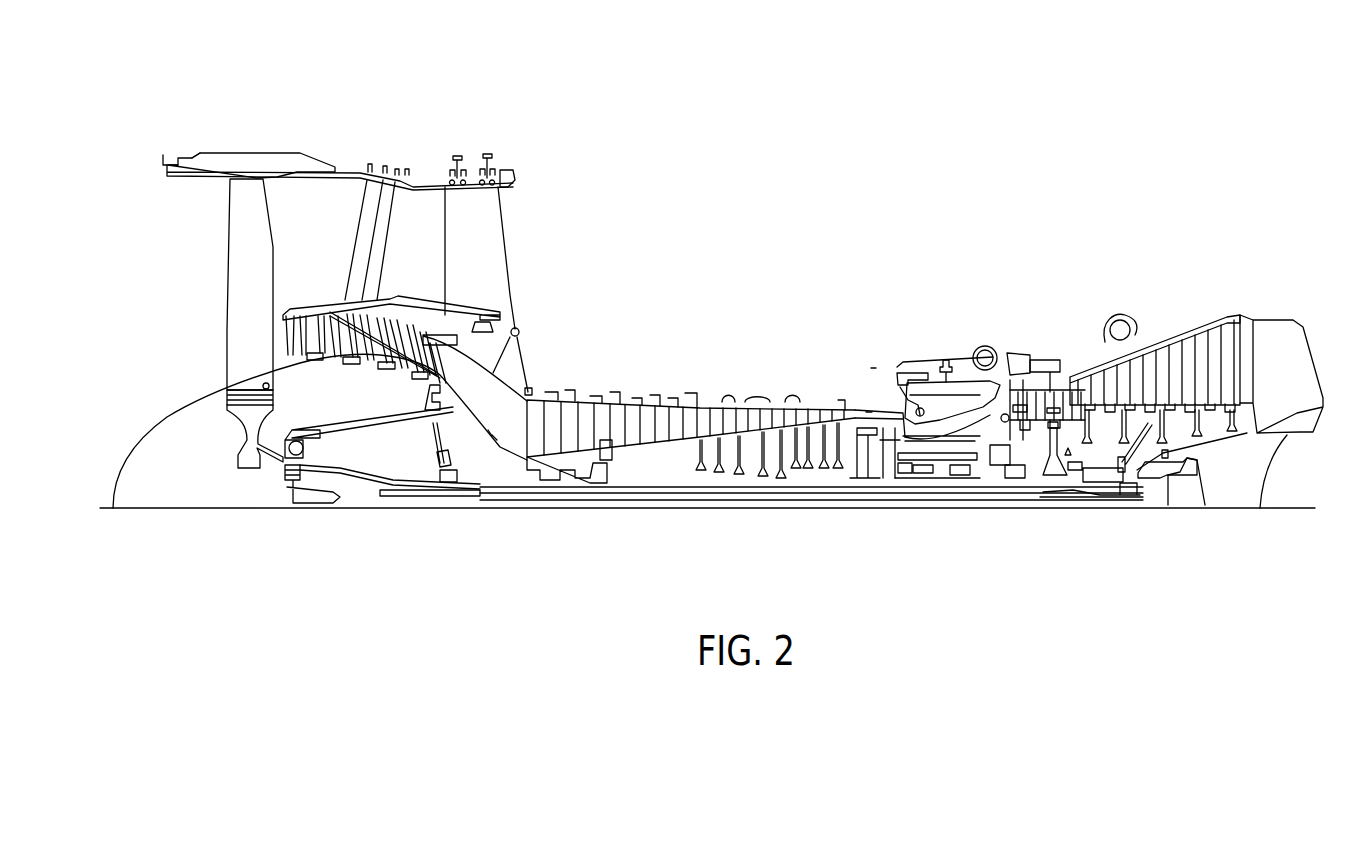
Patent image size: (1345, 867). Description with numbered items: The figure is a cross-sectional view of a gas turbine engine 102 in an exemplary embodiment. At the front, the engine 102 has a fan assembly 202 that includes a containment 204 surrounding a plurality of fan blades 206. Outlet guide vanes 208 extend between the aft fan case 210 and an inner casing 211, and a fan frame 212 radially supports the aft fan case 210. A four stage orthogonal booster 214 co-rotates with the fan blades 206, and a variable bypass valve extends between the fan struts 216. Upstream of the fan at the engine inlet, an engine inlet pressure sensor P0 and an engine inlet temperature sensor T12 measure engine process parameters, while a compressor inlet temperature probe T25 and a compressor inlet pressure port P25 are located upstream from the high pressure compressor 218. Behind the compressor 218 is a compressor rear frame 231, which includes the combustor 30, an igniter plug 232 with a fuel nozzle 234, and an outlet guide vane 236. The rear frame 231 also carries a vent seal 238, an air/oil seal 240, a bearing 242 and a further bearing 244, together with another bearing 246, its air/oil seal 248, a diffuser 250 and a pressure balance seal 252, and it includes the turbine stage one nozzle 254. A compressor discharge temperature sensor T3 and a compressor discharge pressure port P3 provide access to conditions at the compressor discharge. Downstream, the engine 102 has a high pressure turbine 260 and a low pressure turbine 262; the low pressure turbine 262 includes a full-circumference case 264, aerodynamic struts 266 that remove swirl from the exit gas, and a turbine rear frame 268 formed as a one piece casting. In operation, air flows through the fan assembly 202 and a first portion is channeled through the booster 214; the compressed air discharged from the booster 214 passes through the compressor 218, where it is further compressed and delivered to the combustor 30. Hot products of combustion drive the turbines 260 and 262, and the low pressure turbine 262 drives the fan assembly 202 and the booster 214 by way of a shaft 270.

The fan assembly 202 is at (446, 79).
The containment 204 is at (265, 163).
The fan blades 206 is at (240, 270).
The outlet guide vanes 208 is at (385, 232).
The aft fan case 210 is at (508, 170).
The inner casing 211 is at (415, 297).
The fan frame 212 is at (492, 249).
The four stage orthogonal booster 214 is at (520, 345).
The fan struts 216 is at (505, 373).
The high pressure compressor 218 is at (637, 322).
The gas turbine engine 102 is at (1027, 253).
The rear frame of compressor 231 is at (922, 303).
The igniter plug 232 is at (945, 360).
The fuel nozzle 234 is at (897, 370).
The outlet guide vane 236 is at (842, 408).
The vent seal 238 is at (857, 470).
The 4R/A/O seal 240 is at (898, 478).
The 4R bearing 242 is at (915, 478).
The 4B bearing 244 is at (905, 478).
The 5R bearing 246 is at (962, 478).
The 5R/A/O seal 248 is at (1000, 465).
The diffuser 250 is at (1015, 478).
The pressure balance seal 252 is at (1050, 478).
The turbine stage 1 nozzle 254 is at (995, 345).
The high pressure turbine 260 is at (1042, 400).
The low pressure turbine 262 is at (1103, 332).
The 360° case 264 is at (1230, 314).
The aerodynamic struts 266 is at (1278, 342).
The turbine rear frame 268 is at (1220, 512).
The shaft 270 is at (400, 505).
The combustor 30 is at (980, 418).
The engine inlet temperature sensor T12 is at (170, 158).
The engine inlet pressure sensor P0 is at (196, 155).
The compressor inlet temperature probe T25 is at (490, 432).
The compressor inlet pressure port P25 is at (494, 437).
The compressor discharge temperature sensor T3 is at (869, 412).
The compressor discharge pressure port P3 is at (873, 368).